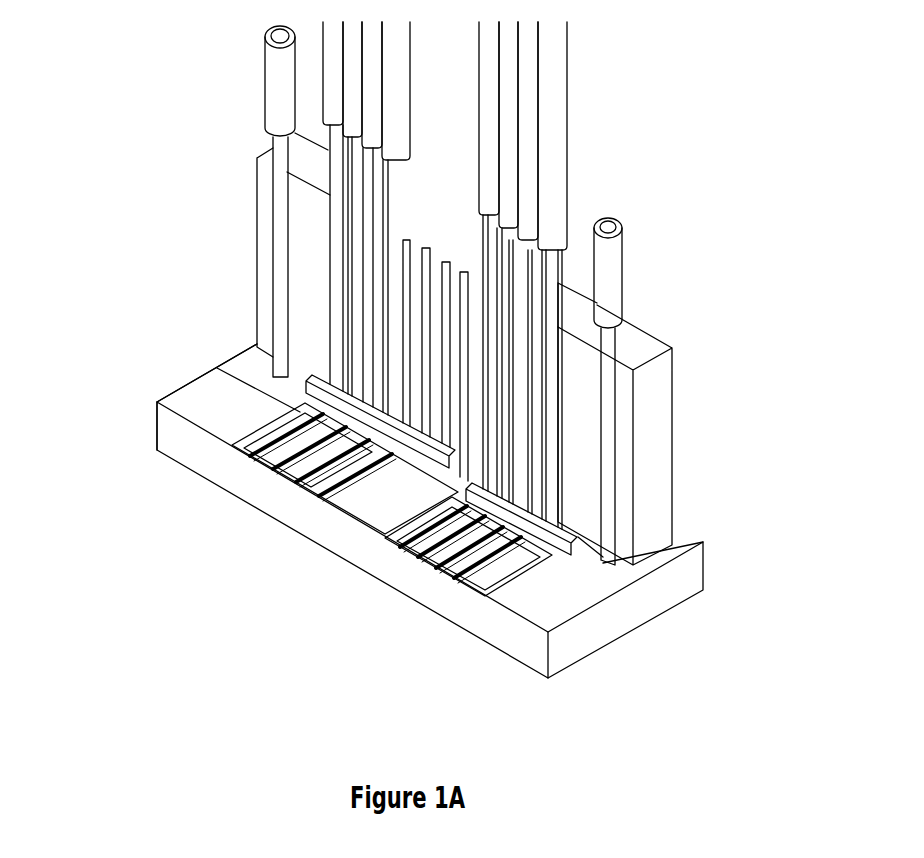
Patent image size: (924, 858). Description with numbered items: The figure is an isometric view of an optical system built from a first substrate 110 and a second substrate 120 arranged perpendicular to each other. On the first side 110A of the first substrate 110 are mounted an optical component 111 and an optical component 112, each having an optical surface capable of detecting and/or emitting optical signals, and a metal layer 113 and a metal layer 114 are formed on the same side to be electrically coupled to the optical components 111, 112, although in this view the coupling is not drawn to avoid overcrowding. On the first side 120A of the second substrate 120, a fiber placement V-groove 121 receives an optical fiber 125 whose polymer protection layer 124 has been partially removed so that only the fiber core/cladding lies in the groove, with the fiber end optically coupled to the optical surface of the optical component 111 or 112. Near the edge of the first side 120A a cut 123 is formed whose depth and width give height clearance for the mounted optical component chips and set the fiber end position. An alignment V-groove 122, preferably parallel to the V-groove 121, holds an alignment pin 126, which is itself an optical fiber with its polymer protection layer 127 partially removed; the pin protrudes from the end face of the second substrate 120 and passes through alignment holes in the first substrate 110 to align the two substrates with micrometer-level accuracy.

The first substrate 110 is at (457, 597).
The first side of the first substrate 110A is at (192, 412).
The optical component 111 is at (235, 376).
The optical component 112 is at (585, 565).
The metal layer 113 is at (250, 432).
The metal layer 114 is at (413, 522).
The second substrate 120 is at (643, 438).
The first side of the second substrate 120A is at (310, 297).
The V-groove 121 is at (415, 253).
The alignment V-groove 122 is at (257, 190).
The cut 123 is at (580, 535).
The polymer protection layer 124 is at (555, 100).
The optical fiber 125 is at (553, 268).
The alignment pin 126 is at (257, 157).
The polymer protection layer 127 is at (280, 63).